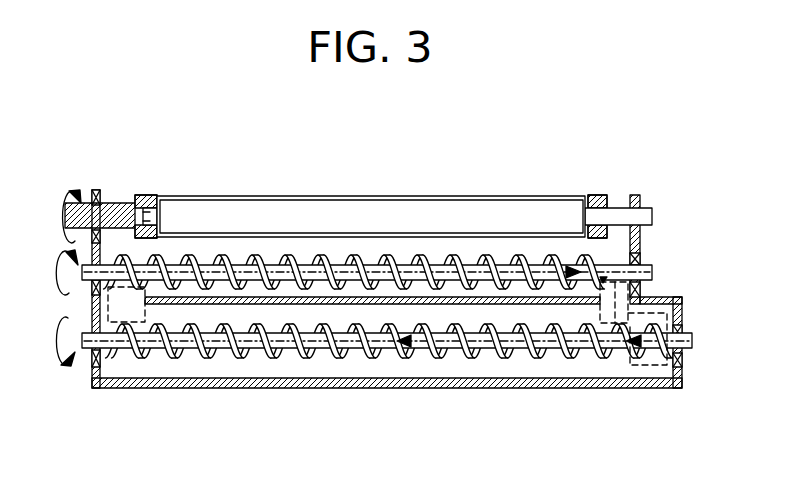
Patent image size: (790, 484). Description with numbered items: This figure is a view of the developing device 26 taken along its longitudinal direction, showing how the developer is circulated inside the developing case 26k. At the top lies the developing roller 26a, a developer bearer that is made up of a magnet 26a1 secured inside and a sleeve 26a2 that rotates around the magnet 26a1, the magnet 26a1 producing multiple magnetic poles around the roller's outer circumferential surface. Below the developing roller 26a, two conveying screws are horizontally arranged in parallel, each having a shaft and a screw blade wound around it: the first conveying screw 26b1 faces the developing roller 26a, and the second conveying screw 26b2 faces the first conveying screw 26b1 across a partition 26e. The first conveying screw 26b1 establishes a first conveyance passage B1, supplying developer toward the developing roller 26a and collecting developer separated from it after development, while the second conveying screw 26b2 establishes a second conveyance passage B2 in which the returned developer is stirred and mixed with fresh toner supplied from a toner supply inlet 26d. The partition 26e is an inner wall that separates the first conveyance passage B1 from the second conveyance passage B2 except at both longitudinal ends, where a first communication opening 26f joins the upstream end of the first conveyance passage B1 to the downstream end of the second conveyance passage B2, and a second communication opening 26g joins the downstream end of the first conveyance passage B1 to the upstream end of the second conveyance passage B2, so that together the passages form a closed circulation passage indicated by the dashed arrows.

The developing device 26 is at (211, 388).
The developing roller 26a is at (505, 123).
The magnet 26a1 is at (410, 208).
The sleeve 26a2 is at (488, 196).
The first conveying screw 26b1 is at (242, 266).
The second conveying screw 26b2 is at (287, 352).
The toner supply inlet 26d is at (648, 367).
The partition 26e is at (370, 305).
The first communication opening 26f is at (122, 290).
The second communication opening 26g is at (607, 323).
The developing case 26k is at (512, 389).
The first conveyance passage B1 is at (328, 248).
The second conveyance passage B2 is at (422, 370).